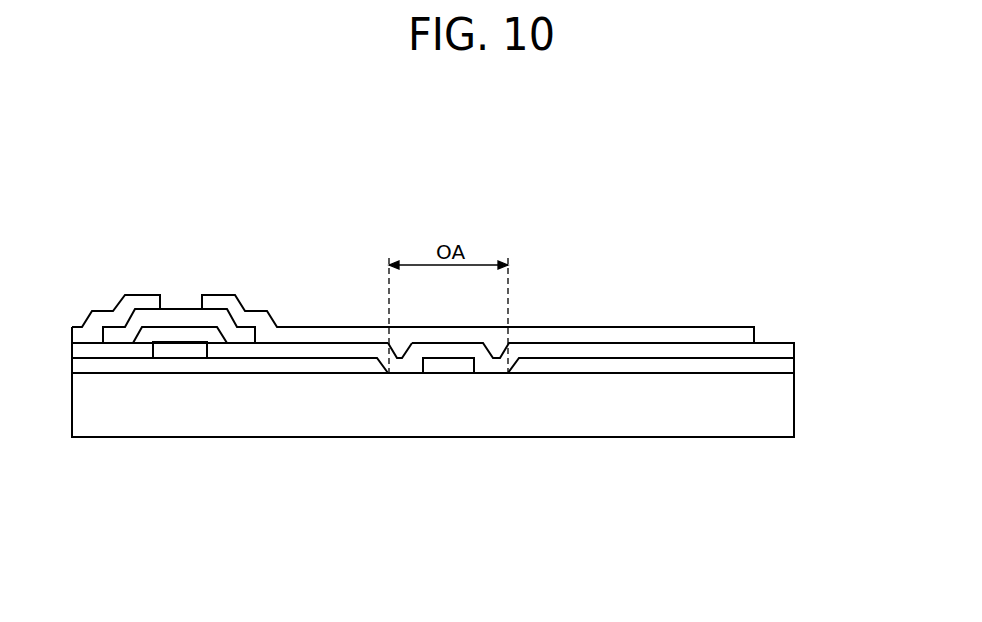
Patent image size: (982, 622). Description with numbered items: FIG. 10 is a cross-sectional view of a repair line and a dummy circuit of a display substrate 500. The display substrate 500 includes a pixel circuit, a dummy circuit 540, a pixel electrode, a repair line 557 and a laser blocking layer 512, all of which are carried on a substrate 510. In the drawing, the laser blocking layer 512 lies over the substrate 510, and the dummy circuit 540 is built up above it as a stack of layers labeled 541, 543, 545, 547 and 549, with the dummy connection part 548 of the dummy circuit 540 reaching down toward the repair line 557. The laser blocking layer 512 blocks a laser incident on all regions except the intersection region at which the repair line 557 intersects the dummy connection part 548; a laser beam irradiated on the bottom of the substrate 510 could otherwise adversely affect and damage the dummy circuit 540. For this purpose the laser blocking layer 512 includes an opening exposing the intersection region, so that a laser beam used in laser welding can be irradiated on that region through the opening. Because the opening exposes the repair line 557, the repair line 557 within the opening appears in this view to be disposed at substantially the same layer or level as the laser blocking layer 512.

The display substrate 500 is at (483, 145).
The substrate 510 is at (783, 407).
The laser blocking layer 512 is at (783, 369).
The dummy circuit 540 is at (345, 497).
The gate electrode 541 is at (182, 348).
The active pattern 543 is at (228, 347).
The insulating pattern 545 is at (243, 335).
The source electrode 547 is at (93, 335).
The dummy connection part 548 is at (403, 347).
The drain electrode 549 is at (318, 335).
The repair line 557 is at (455, 365).